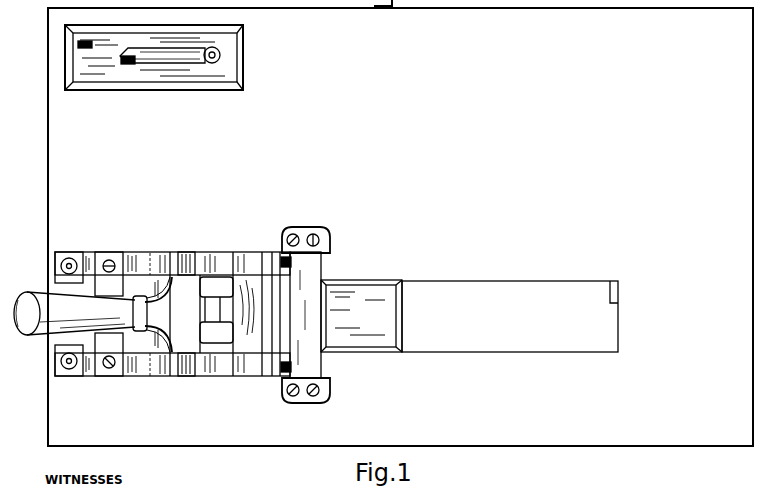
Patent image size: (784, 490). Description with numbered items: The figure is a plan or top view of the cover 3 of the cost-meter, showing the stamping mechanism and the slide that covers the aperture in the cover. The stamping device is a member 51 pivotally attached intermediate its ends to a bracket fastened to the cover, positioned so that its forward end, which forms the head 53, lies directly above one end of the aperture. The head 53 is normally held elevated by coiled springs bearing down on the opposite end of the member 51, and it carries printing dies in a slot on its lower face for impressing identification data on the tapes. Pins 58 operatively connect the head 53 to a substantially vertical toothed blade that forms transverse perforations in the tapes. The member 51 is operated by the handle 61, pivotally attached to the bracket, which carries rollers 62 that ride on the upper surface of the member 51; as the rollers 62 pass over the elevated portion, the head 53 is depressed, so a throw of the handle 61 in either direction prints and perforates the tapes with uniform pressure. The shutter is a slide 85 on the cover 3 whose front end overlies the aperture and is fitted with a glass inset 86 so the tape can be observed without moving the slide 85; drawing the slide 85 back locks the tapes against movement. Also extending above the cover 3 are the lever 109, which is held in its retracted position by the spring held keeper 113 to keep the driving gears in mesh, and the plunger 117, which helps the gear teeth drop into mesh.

The top plate or cover 3 is at (600, 141).
The member 51 is at (213, 262).
The head 53 is at (268, 290).
The pins 58 is at (288, 262).
The handle 61 is at (80, 313).
The rollers 62 is at (180, 255).
The slide 85 is at (510, 316).
The glass inset 86 is at (361, 316).
The lever 109 is at (135, 64).
The spring held keeper 113 is at (191, 50).
The plunger 117 is at (85, 41).